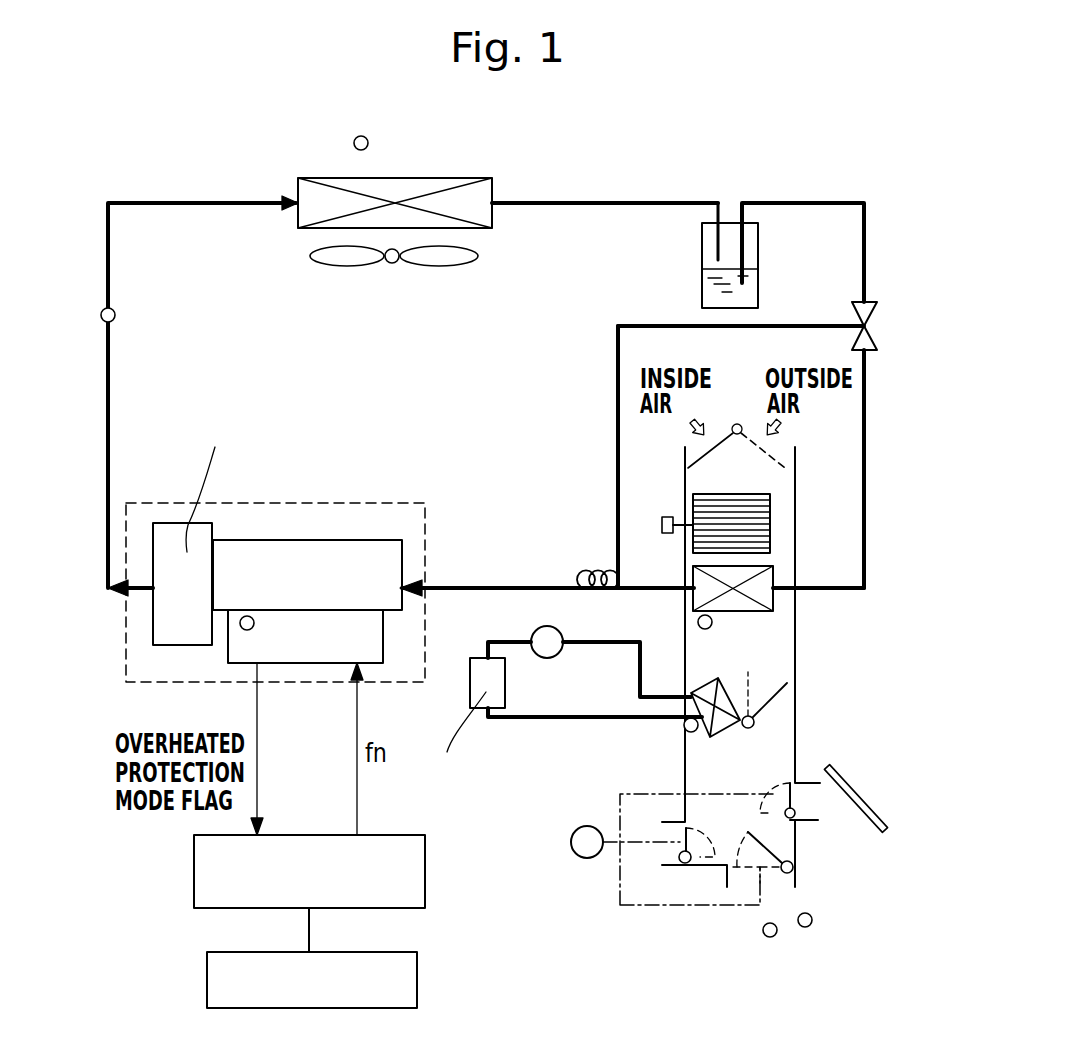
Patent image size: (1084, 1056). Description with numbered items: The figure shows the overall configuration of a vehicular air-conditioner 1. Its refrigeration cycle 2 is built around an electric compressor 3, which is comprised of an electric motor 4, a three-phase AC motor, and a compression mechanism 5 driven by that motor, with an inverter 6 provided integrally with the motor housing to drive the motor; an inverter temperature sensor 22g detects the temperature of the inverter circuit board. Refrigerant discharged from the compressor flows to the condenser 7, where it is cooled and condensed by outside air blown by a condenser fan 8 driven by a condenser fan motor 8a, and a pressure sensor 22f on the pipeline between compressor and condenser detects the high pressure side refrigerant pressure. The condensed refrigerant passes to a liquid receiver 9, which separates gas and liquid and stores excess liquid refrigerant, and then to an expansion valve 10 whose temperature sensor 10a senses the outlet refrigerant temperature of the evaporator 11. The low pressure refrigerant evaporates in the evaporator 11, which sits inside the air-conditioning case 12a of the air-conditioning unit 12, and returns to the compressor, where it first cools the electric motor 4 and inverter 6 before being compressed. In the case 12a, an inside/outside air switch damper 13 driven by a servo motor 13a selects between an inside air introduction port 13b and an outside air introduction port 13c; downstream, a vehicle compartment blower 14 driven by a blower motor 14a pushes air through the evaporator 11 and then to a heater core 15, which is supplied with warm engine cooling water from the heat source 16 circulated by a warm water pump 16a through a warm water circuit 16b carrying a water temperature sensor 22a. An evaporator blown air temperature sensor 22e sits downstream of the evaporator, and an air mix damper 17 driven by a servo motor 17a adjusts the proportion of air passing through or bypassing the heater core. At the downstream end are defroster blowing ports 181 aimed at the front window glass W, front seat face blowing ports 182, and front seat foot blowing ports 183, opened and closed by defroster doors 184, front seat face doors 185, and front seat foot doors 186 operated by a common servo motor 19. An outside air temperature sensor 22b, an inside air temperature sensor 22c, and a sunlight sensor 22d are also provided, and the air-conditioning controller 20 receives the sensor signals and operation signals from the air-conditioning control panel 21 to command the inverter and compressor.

The vehicular air-conditioner 1 is at (575, 167).
The refrigeration cycle 2 is at (209, 203).
The electric compressor 3 is at (345, 503).
The electric motor 4 is at (252, 540).
The compression mechanism 5 is at (178, 523).
The inverter 6 is at (384, 628).
The condenser 7 is at (432, 178).
The condenser fan 8 is at (452, 266).
The condenser fan motor 8a is at (392, 264).
The liquid receiver 9 is at (702, 250).
The expansion valve 10 is at (876, 322).
The temperature sensor 10a is at (594, 566).
The evaporator 11 is at (774, 597).
The air-conditioning unit 12 is at (798, 637).
The air-conditioning case 12a is at (796, 541).
The inside/outside air switch damper 13 is at (736, 423).
The servo motor 13a is at (742, 424).
The inside air introduction port 13b is at (690, 448).
The outside air introduction port 13c is at (785, 448).
The vehicle compartment blower 14 is at (770, 522).
The blower motor 14a is at (662, 523).
The heater core 15 is at (720, 680).
The heat source 16 is at (470, 688).
The warm water pump 16a is at (540, 628).
The warm water circuit 16b is at (535, 719).
The air mix damper 17 is at (778, 700).
The servo motor 17a is at (755, 727).
The servo motor 19 is at (587, 858).
The air-conditioning controller 20 is at (425, 876).
The air-conditioning control panel 21 is at (417, 986).
The water temperature sensor 22a is at (689, 732).
The outside air temperature sensor 22b is at (361, 136).
The inside air temperature sensor 22c is at (770, 938).
The sunlight sensor 22d is at (806, 928).
The evaporator blown air temperature sensor 22e is at (697, 622).
The pressure sensor 22f is at (116, 315).
The inverter temperature sensor 22g is at (243, 631).
The defroster blowing port 181 is at (812, 806).
The front seat face blowing port 182 is at (774, 880).
The front seat foot blowing port 183 is at (668, 836).
The defroster door 184 is at (798, 832).
The front seat face door 185 is at (792, 874).
The front seat foot door 186 is at (690, 869).
The front window glass W is at (862, 800).